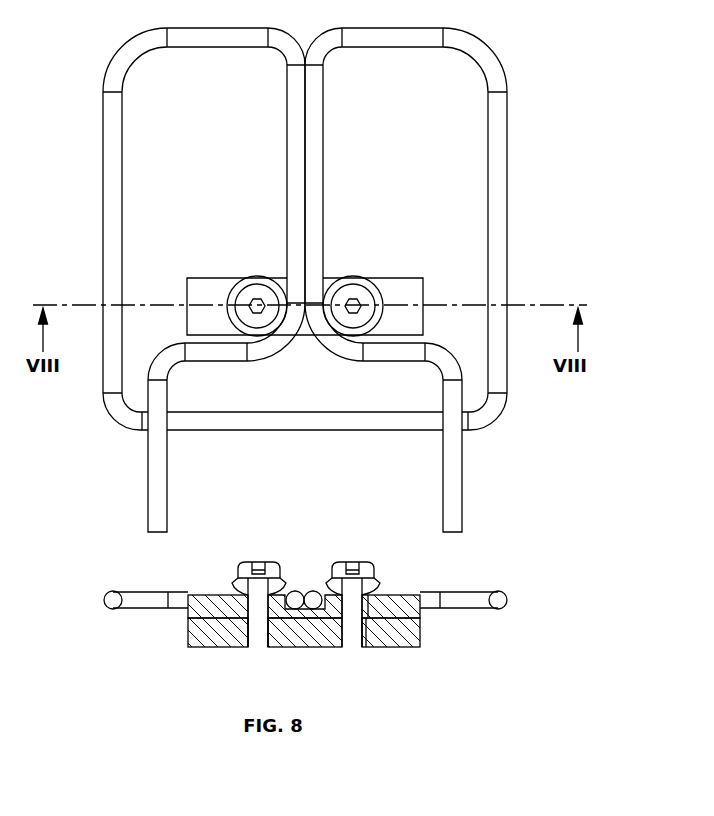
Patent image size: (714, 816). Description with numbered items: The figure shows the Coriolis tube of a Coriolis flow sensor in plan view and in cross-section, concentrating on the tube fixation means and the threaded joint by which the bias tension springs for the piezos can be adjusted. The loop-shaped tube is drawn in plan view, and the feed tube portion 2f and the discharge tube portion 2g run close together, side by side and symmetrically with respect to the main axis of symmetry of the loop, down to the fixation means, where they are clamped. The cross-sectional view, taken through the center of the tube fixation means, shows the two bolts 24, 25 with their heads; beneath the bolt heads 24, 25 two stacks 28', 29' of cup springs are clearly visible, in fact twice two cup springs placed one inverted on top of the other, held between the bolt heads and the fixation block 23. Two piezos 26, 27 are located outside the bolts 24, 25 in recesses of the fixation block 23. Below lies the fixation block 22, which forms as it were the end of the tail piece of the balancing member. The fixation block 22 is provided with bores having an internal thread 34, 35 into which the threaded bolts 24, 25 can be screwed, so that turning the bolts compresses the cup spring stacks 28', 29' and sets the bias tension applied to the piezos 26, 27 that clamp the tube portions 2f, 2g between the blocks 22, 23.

The feed tube portion 2f is at (298, 173).
The discharge tube portion 2g is at (313, 173).
The fixation block 22 is at (213, 628).
The fixation block 23 is at (402, 600).
The bolt 24 is at (264, 293).
The bolt 25 is at (352, 297).
The piezo 26 is at (197, 615).
The piezo 27 is at (417, 615).
The stack of cup springs 28' is at (228, 575).
The stack of cup springs 29' is at (363, 545).
The internal thread 34 is at (243, 638).
The internal thread 35 is at (380, 632).